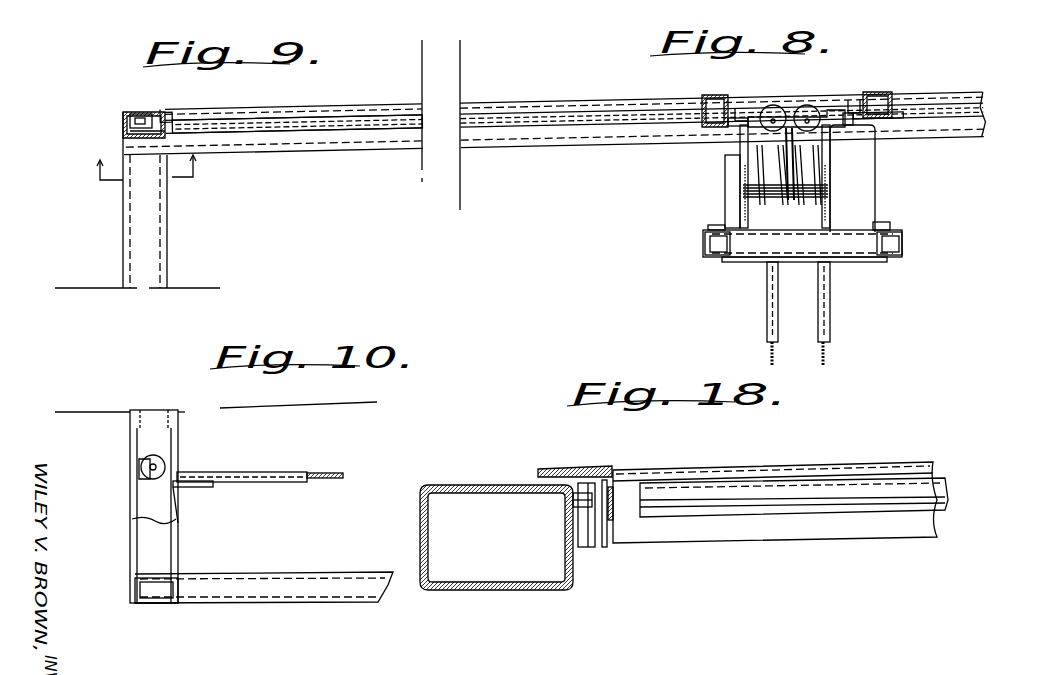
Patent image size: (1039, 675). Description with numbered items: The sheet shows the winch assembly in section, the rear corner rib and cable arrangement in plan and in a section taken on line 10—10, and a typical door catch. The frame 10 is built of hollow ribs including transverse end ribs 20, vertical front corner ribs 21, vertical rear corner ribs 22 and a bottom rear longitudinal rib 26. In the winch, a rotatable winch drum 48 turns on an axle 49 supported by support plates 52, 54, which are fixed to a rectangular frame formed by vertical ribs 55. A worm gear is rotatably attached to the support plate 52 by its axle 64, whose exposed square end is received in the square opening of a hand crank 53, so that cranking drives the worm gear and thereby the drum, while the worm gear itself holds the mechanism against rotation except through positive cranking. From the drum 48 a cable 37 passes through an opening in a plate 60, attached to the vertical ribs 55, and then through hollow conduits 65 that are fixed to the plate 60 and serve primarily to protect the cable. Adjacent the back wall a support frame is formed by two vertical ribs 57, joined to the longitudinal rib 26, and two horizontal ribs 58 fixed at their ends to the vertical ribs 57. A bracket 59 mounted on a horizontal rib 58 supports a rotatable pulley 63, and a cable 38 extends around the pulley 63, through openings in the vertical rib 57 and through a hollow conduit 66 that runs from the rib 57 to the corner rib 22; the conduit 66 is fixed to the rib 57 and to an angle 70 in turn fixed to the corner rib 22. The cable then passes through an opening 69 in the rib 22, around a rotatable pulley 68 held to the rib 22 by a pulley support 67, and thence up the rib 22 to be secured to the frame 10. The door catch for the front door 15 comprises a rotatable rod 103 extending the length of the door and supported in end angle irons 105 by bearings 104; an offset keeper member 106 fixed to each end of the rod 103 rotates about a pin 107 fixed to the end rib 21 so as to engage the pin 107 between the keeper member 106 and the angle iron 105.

In FIG. 9, the frame 10 is at (144, 178).
In FIG. 18, the front door 15 is at (736, 453).
In FIG. 9, the transverse end ribs 20 is at (123, 230).
In FIG. 18, the vertical front corner ribs 21 is at (518, 590).
In FIG. 9, the vertical rear corner ribs 22 is at (123, 115).
In FIG. 10, the vertical rear corner ribs 22 is at (135, 553).
In FIG. 9, the bottom rear longitudinal rib 26 is at (378, 110).
In FIG. 8, the bottom rear longitudinal rib 26 is at (963, 108).
In FIG. 10, the bottom rear longitudinal rib 26 is at (270, 586).
In FIG. 8, the cable 37 is at (777, 352).
In FIG. 9, the cable 38 is at (170, 121).
In FIG. 8, the cable 38 is at (737, 110).
In FIG. 10, the cable 38 is at (334, 476).
In FIG. 8, the winch drum 48 is at (740, 148).
In FIG. 8, the axle 49 is at (740, 172).
In FIG. 8, the support plate 52 is at (855, 165).
In FIG. 8, the hand crank 53 is at (864, 245).
In FIG. 8, the support plate 54 is at (732, 195).
In FIG. 8, the vertical ribs 55 is at (705, 250).
In FIG. 8, the vertical ribs 57 is at (722, 95).
In FIG. 8, the horizontal ribs 58 is at (832, 108).
In FIG. 8, the bracket 59 is at (728, 124).
In FIG. 8, the plate 60 is at (752, 263).
In FIG. 8, the pulley 63 is at (807, 105).
In FIG. 8, the axle 64 is at (885, 130).
In FIG. 8, the hollow conduits 65 is at (818, 306).
In FIG. 9, the hollow conduit 66 is at (322, 124).
In FIG. 8, the hollow conduit 66 is at (985, 110).
In FIG. 10, the hollow conduit 66 is at (278, 474).
In FIG. 9, the pulley support 67 is at (140, 112).
In FIG. 10, the pulley support 67 is at (137, 477).
In FIG. 9, the pulley 68 is at (150, 114).
In FIG. 10, the pulley 68 is at (158, 456).
In FIG. 9, the opening 69 is at (163, 132).
In FIG. 10, the opening 69 is at (174, 479).
In FIG. 10, the angle 70 is at (204, 488).
In FIG. 18, the rotatable rod 103 is at (757, 500).
In FIG. 18, the bearings 104 is at (610, 527).
In FIG. 18, the end angle irons 105 is at (586, 455).
In FIG. 18, the offset keeper member 106 is at (587, 536).
In FIG. 18, the pin 107 is at (568, 502).